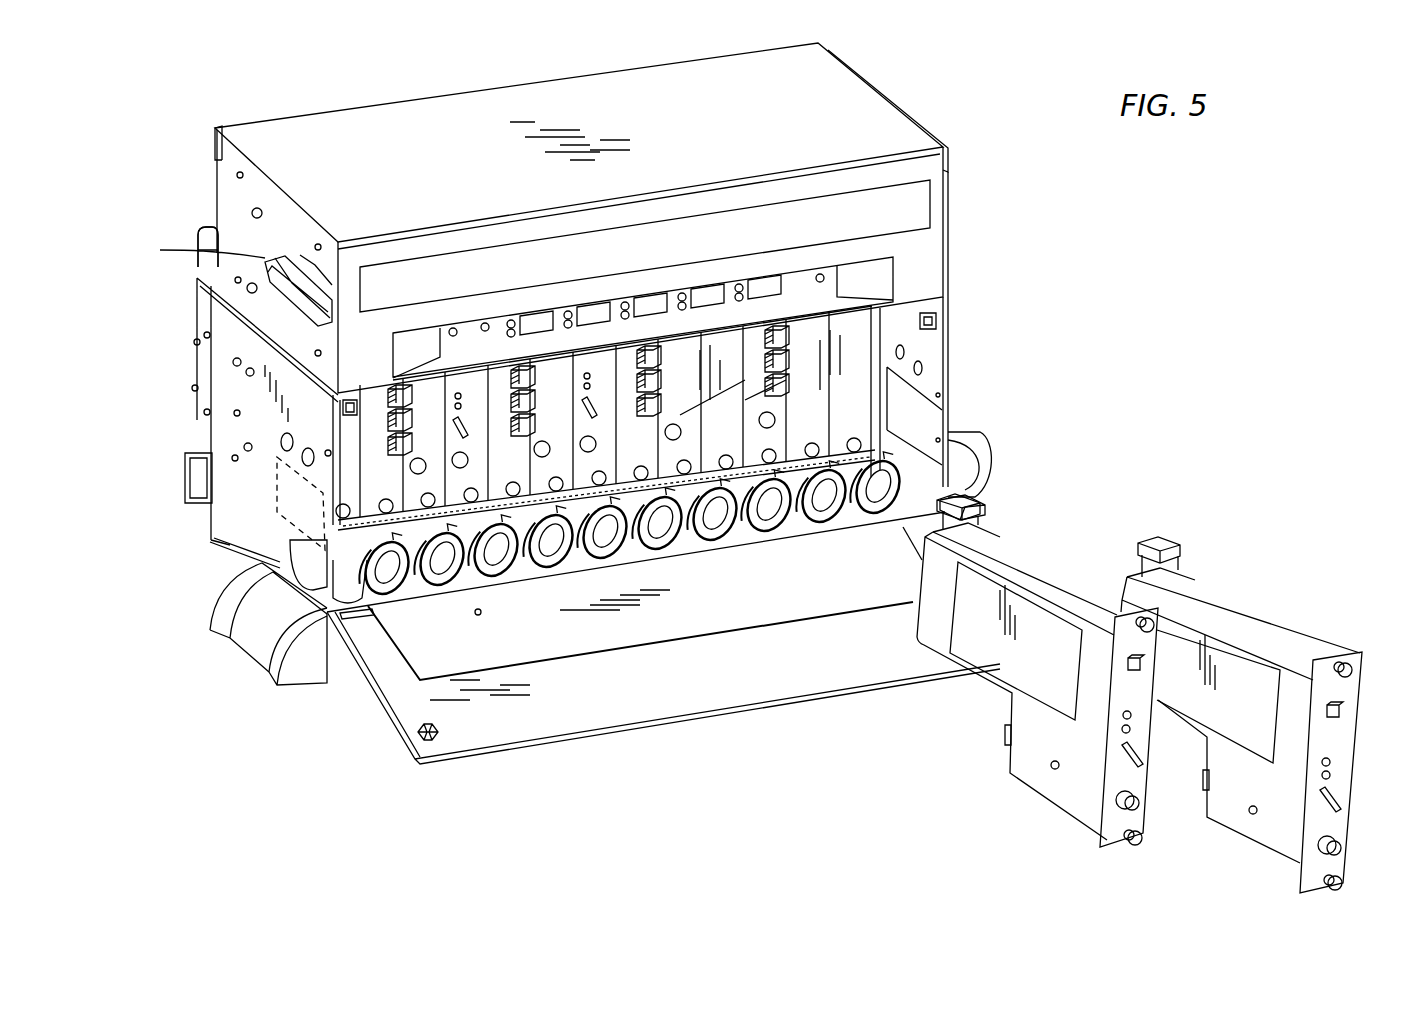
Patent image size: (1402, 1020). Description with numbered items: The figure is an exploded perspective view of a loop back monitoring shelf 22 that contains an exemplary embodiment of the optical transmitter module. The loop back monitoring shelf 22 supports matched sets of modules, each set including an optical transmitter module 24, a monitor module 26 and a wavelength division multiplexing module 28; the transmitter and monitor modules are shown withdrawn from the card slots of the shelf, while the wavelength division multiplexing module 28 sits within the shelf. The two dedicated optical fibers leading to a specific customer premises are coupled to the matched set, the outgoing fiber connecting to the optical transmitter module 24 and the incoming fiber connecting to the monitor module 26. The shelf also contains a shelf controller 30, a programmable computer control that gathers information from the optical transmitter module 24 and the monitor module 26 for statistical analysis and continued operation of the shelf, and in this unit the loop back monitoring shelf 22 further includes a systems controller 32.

The loop back monitoring shelf 22 is at (590, 403).
The optical transmitter module 24 is at (1047, 795).
The monitor module 26 is at (1248, 842).
The wavelength division multiplexing module 28 is at (773, 420).
The shelf controller 30 is at (200, 255).
The systems controller 32 is at (295, 265).